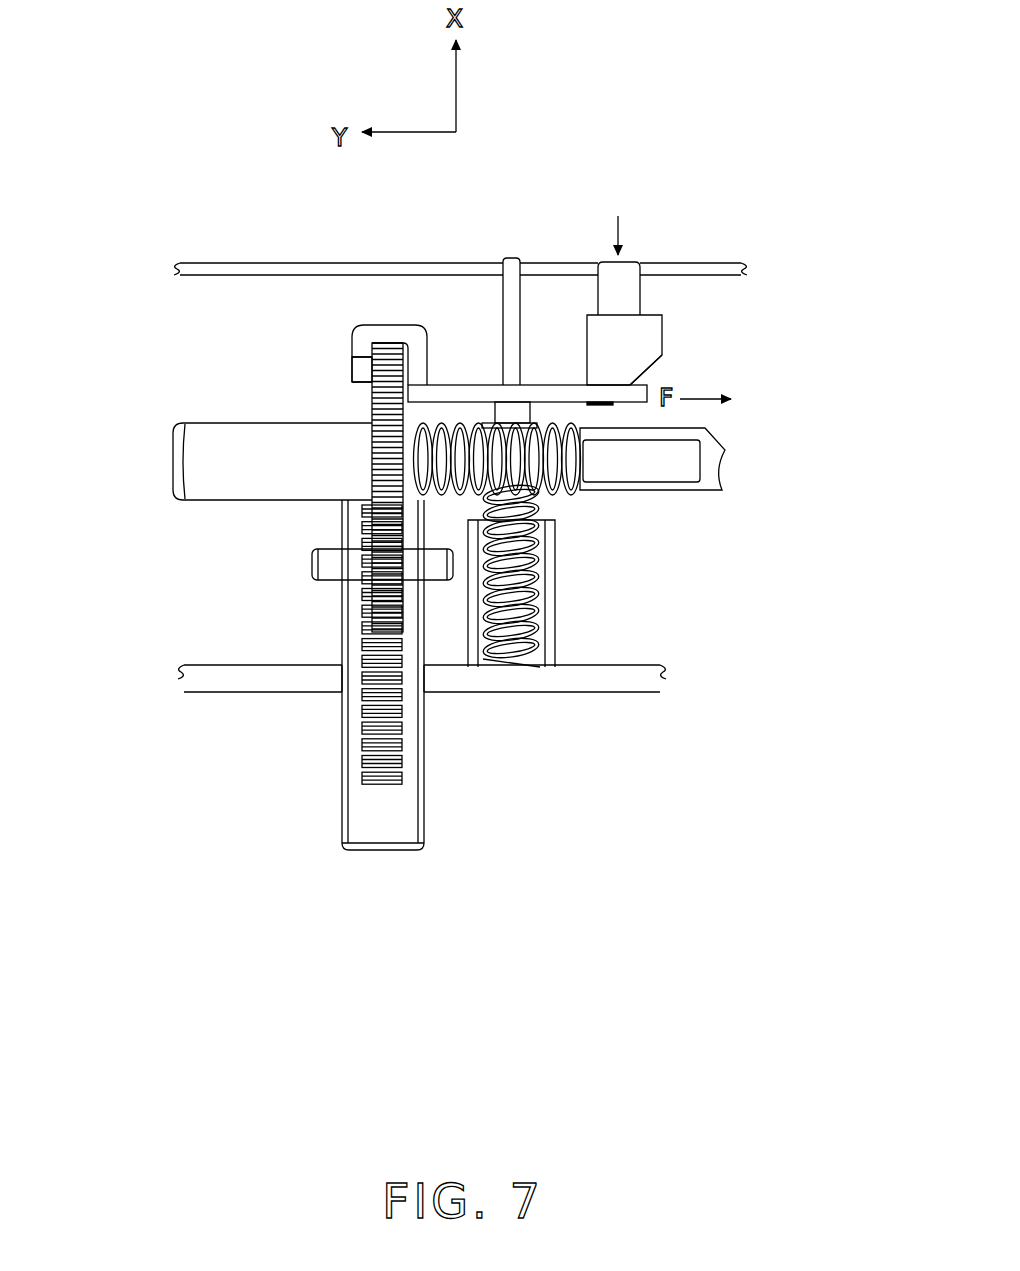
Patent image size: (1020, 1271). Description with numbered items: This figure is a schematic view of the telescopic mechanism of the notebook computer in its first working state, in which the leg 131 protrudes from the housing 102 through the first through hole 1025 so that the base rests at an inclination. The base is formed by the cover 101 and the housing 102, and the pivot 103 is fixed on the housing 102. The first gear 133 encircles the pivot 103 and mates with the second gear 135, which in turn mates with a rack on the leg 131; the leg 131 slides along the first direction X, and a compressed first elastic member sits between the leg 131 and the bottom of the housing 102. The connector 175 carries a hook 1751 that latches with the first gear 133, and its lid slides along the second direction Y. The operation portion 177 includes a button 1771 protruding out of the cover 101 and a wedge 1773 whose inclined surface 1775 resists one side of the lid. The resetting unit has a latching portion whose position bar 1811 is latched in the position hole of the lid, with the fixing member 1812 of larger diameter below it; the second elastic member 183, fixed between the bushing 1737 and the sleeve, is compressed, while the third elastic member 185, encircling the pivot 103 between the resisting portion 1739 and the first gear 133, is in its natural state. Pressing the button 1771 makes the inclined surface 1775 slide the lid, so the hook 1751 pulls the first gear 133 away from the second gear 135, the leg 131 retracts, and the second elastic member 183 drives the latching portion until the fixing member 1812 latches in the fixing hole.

The cover 101 is at (228, 270).
The housing 102 is at (437, 712).
The first through hole 1025 is at (342, 693).
The pivot 103 is at (220, 442).
The leg 131 is at (357, 798).
The first gear 133 is at (378, 402).
The second gear 135 is at (380, 614).
The connector 175 is at (440, 346).
The hook 1751 is at (302, 348).
The bushing 1737 is at (547, 583).
The resisting portion 1739 is at (580, 432).
The operation portion 177 is at (697, 309).
The button 1771 is at (622, 270).
The wedge 1773 is at (655, 338).
The inclined surface 1775 is at (655, 358).
The position bar 1811 is at (513, 308).
The fixing member 1812 is at (503, 415).
The second elastic member 183 is at (530, 618).
The third elastic member 185 is at (557, 497).